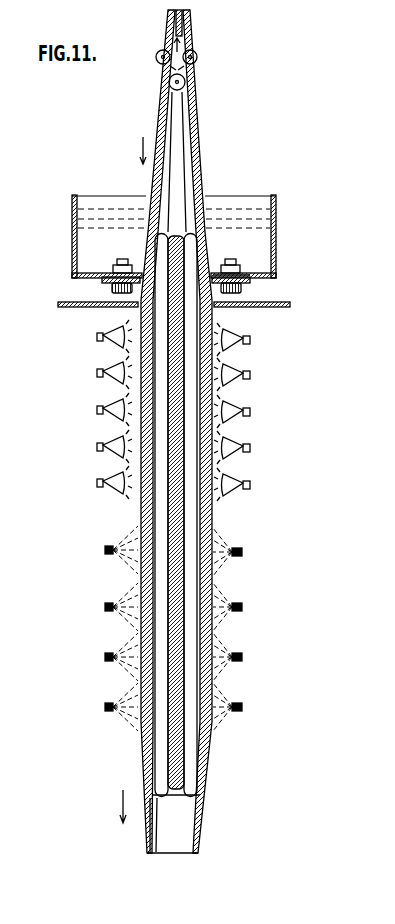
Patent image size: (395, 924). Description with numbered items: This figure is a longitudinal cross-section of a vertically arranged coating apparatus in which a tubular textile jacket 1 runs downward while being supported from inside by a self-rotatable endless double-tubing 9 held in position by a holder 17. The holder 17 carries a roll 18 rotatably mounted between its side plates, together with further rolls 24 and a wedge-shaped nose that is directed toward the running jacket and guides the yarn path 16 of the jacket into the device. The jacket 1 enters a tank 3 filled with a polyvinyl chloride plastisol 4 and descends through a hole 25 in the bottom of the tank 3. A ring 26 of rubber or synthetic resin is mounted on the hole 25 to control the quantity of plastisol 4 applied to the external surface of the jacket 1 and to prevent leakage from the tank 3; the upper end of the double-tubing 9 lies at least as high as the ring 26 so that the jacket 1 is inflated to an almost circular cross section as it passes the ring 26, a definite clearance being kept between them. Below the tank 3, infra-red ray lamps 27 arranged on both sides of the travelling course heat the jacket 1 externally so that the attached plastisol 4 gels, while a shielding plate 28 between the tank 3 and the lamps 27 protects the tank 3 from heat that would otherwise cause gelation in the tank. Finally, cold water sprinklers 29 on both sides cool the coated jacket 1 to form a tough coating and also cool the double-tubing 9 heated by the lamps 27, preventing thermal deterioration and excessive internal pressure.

The tubular textile jacket 1 is at (206, 180).
The tank 3 is at (276, 257).
The plastisol 4 is at (258, 218).
The endless double-tubing 9 is at (198, 521).
The yarn inlet channel 16 is at (183, 141).
The holder 17 is at (170, 68).
The roll 18 is at (186, 85).
The guide rollers 24 is at (158, 52).
The hole 25 is at (214, 277).
The ring 26 is at (108, 281).
The infra-red ray lamps 27 is at (243, 406).
The shielding plate 28 is at (280, 306).
The cold water sprinklers 29 is at (242, 556).